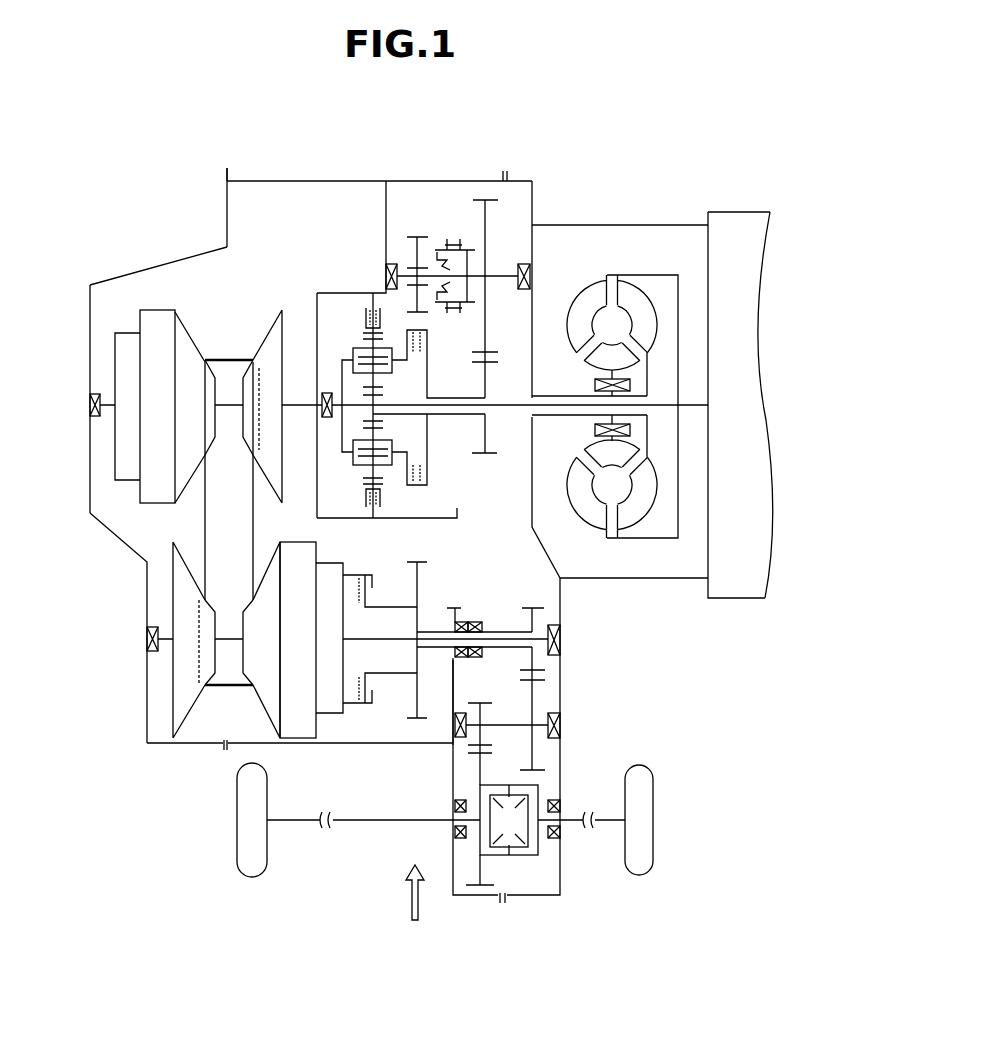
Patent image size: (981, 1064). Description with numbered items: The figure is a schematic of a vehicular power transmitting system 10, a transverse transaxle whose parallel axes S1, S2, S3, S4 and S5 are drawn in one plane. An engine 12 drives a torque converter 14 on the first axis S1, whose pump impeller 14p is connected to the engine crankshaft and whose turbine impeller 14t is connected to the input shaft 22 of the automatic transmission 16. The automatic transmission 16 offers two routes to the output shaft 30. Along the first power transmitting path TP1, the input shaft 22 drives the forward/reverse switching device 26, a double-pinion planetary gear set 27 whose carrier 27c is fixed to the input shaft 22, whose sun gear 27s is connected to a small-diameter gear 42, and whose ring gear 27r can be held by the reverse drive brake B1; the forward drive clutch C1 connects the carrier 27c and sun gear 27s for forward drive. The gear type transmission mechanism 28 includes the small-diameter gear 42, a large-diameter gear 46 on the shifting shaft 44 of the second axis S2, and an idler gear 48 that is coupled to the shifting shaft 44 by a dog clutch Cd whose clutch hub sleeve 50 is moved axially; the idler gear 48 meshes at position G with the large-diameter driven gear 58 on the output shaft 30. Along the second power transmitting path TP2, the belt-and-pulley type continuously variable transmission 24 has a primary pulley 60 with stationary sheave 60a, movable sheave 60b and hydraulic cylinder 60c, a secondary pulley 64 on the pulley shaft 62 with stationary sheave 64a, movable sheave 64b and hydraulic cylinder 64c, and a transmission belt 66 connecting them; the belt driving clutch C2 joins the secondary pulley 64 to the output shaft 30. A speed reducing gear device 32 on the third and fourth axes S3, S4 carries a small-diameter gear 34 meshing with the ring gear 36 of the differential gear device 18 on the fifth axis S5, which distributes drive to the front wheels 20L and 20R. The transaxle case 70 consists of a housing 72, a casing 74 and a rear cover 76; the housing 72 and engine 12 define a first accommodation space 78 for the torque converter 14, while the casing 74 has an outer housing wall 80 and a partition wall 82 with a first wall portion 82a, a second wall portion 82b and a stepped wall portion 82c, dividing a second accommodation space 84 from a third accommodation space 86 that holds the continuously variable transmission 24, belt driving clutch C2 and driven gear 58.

The vehicular power transmitting system 10 is at (602, 163).
The engine 12 is at (757, 405).
The torque converter 14 is at (669, 247).
The pump impeller 14p is at (585, 305).
The turbine impeller 14t is at (630, 292).
The automatic transmission 16 is at (245, 250).
The differential gear device 18 is at (503, 858).
The left front wheel 20L is at (242, 842).
The right front wheel 20R is at (650, 845).
The input shaft 22 is at (315, 400).
The belt-and-pulley type continuously variable transmission 24 is at (162, 298).
The forward/reverse switching device 26 is at (462, 523).
The planetary gear set 27 is at (356, 312).
The carrier 27c is at (356, 360).
The ring gear 27r is at (366, 482).
The sun gear 27s is at (385, 426).
The gear type transmission mechanism 28 is at (515, 213).
The output shaft 30 is at (500, 631).
The speed reducing gear device 32 is at (586, 698).
The small-diameter gear 34 is at (484, 700).
The ring gear 36 is at (480, 885).
The small-diameter gear 42 is at (473, 453).
The shifting shaft 44 is at (500, 287).
The large-diameter gear 46 is at (485, 198).
The idler gear 48 is at (418, 236).
The clutch hub sleeve 50 is at (455, 318).
The driven gear 58 is at (422, 561).
The primary pulley 60 is at (134, 521).
The stationary sheave 60a is at (265, 350).
The movable sheave 60b is at (194, 350).
The hydraulic cylinder 60c is at (127, 341).
The pulley shaft 62 is at (556, 635).
The secondary pulley 64 is at (144, 736).
The stationary sheave 64a is at (177, 602).
The movable sheave 64b is at (264, 693).
The hydraulic cylinder 64c is at (325, 705).
The transmission belt 66 is at (229, 357).
The transaxle case 70 is at (203, 165).
The housing 72 is at (585, 224).
The casing 74 is at (317, 170).
The rear cover 76 is at (90, 342).
The first accommodation space 78 is at (571, 565).
The outer housing wall 80 is at (292, 180).
The partition wall 82 is at (382, 205).
The first wall portion 82a is at (384, 237).
The second wall portion 82b is at (455, 705).
The stepped wall portion 82c is at (408, 519).
The second accommodation space 84 is at (511, 565).
The third accommodation space 86 is at (241, 213).
The reverse drive brake B1 is at (383, 320).
The forward drive clutch C1 is at (429, 460).
The belt driving clutch C2 is at (380, 652).
The dog clutch Cd is at (455, 257).
The first axis S1 is at (77, 405).
The second axis S2 is at (434, 275).
The third axis S3 is at (134, 638).
The fourth axis S4 is at (568, 725).
The fifth axis S5 is at (672, 822).
The first power transmitting path TP1 is at (440, 180).
The second power transmitting path TP2 is at (200, 762).
The position of mutual meshing engagement G is at (415, 908).